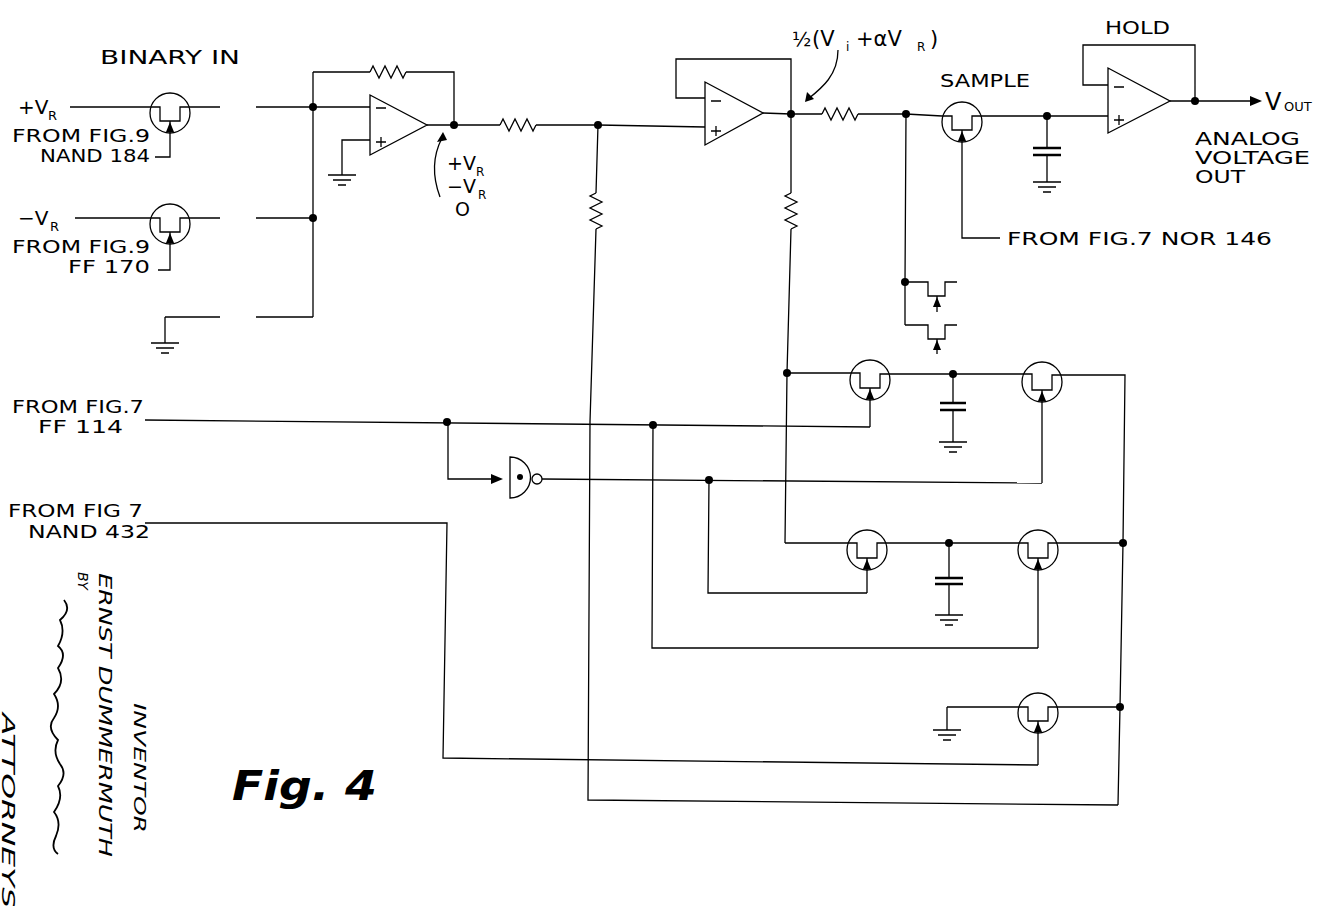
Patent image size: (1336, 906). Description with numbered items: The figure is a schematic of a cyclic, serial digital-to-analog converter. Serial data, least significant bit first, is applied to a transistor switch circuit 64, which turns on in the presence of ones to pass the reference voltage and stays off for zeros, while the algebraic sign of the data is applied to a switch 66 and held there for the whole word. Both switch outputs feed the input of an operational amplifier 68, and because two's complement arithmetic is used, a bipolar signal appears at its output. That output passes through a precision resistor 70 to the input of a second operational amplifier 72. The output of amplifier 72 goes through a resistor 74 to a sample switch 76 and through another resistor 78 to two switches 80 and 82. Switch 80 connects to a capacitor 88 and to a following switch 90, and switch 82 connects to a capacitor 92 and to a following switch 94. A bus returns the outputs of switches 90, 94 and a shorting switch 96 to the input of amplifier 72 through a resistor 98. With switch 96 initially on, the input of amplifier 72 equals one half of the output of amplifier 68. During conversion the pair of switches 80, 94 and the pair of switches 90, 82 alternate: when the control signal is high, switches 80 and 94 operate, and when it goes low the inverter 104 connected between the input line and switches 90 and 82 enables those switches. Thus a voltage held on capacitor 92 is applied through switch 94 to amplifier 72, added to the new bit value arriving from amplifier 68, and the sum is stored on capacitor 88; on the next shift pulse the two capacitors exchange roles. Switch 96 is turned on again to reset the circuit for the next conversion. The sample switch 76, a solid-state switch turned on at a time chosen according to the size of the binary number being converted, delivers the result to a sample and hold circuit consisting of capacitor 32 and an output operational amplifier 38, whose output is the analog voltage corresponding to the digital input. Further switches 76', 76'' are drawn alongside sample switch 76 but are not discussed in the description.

The transistor switch circuit 64 is at (181, 100).
The switch 66 is at (181, 211).
The operational amplifier 68 is at (393, 102).
The precision resistor 70 is at (517, 120).
The operational amplifier 72 is at (726, 97).
The resistor 74 is at (848, 113).
The sample switch 76 is at (978, 164).
The sample switch to Y axis 76' is at (1040, 292).
The sample switch to Z axis 76'' is at (1040, 335).
The resistor 78 is at (794, 196).
The switch 80 is at (857, 391).
The switch 82 is at (869, 532).
The capacitor 88 is at (946, 410).
The switch 90 is at (1055, 400).
The capacitor 92 is at (941, 582).
The switch 94 is at (1041, 532).
The shorting switch 96 is at (1041, 695).
The resistor 98 is at (600, 193).
The inverter 104 is at (519, 459).
The capacitor 32 is at (1055, 149).
The output operational amplifier 38 is at (1137, 81).